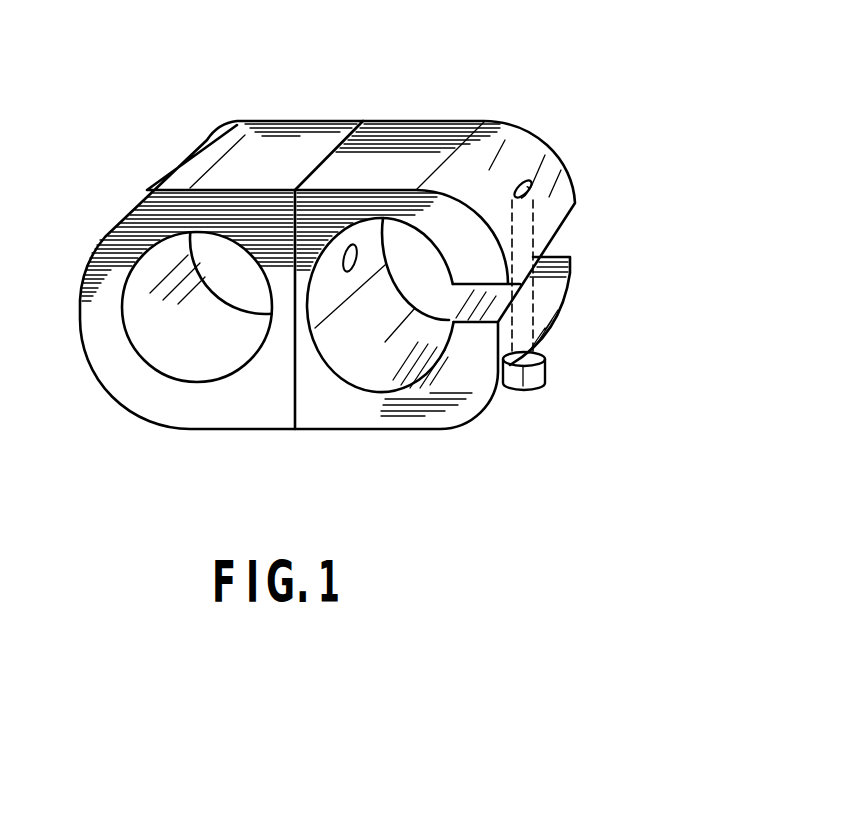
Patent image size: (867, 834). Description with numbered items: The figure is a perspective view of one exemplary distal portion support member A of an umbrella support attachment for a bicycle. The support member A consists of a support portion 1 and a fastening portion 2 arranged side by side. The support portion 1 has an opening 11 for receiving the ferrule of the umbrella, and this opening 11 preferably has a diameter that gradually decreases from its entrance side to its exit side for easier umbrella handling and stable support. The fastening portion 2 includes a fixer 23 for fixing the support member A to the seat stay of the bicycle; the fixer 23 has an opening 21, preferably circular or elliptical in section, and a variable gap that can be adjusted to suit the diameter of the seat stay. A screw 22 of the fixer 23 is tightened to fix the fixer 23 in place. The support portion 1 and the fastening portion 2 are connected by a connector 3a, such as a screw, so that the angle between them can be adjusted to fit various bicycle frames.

The distal portion support member A is at (649, 86).
The support portion 1 is at (264, 138).
The fastening portion 2 is at (450, 130).
The opening 11 is at (163, 350).
The opening 21 is at (367, 362).
The connector 3a is at (352, 276).
The screw 22 is at (547, 368).
The fixer 23 is at (575, 274).